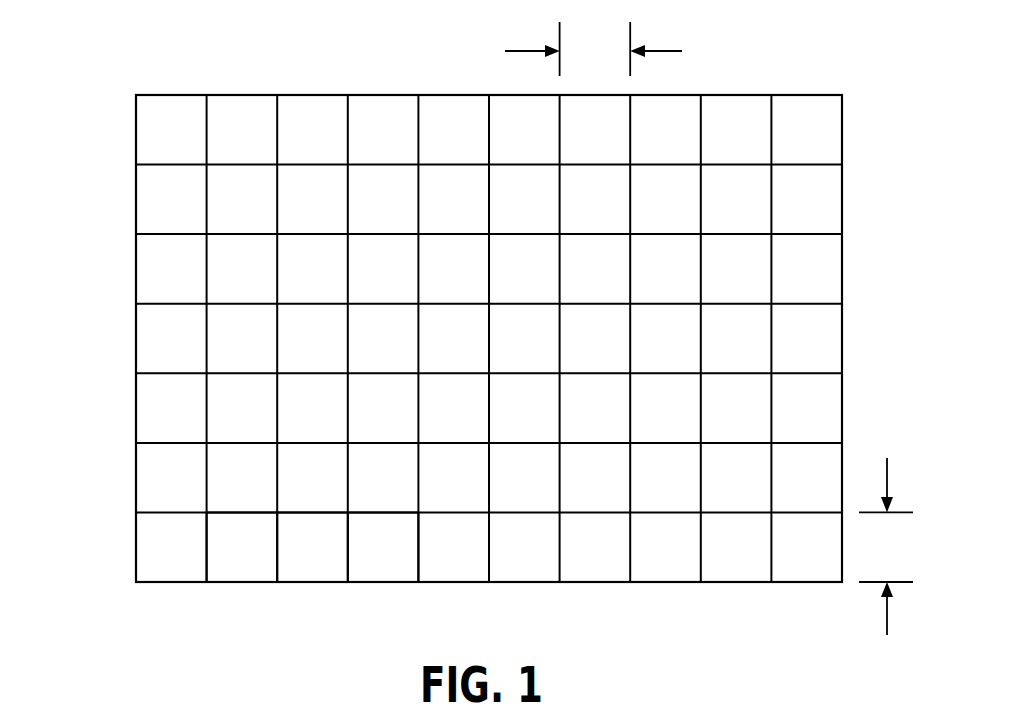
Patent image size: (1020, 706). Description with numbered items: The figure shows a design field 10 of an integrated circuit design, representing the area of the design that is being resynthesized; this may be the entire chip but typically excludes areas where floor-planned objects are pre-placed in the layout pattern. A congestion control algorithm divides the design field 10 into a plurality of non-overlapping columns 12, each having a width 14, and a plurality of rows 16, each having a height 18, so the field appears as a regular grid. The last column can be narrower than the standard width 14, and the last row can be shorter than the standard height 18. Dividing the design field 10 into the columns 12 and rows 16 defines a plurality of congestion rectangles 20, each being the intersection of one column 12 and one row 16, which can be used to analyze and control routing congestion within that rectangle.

The design field 10 is at (848, 106).
The columns 12 is at (312, 95).
The width 14 is at (663, 51).
The rows 16 is at (137, 340).
The height 18 is at (887, 618).
The congestion rectangles 20 is at (385, 477).